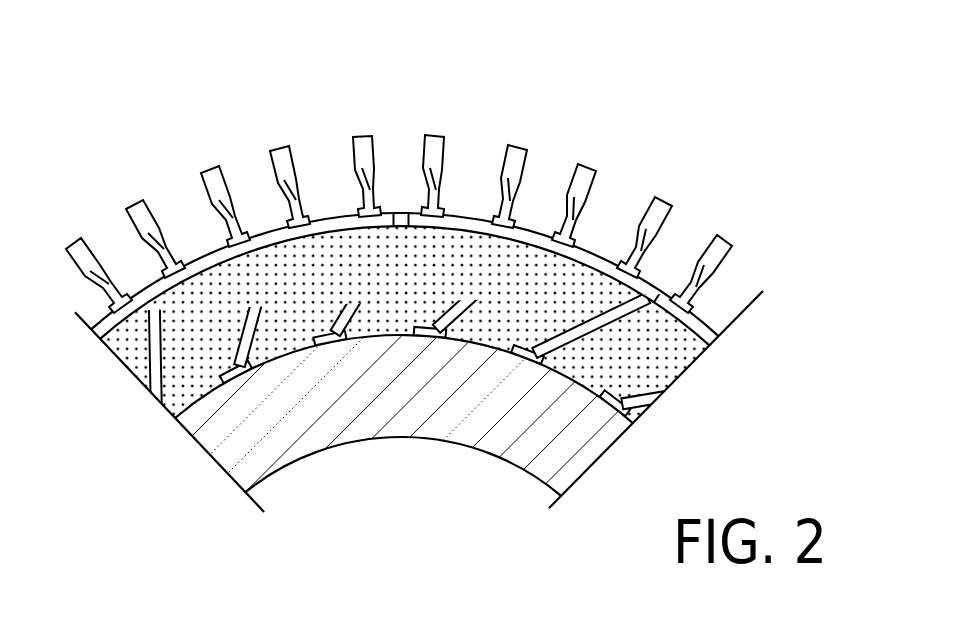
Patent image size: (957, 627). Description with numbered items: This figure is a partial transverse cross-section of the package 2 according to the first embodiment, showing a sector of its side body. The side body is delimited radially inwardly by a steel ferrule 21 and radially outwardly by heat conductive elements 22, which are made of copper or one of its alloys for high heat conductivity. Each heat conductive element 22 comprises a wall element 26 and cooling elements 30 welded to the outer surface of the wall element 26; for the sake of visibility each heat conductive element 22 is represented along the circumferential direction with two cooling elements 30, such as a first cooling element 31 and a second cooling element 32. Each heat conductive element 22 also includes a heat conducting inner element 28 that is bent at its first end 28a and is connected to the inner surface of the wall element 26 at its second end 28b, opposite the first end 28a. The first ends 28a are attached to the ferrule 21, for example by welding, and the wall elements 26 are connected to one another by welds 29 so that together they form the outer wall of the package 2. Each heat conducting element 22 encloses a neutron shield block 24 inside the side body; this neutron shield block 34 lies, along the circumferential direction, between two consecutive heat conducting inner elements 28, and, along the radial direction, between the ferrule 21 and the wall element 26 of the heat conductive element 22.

The package 2 is at (770, 445).
The steel ferrule 21 is at (583, 440).
The heat conductive element 22 is at (747, 265).
The neutron shield block 24 is at (655, 355).
The wall element 26 is at (660, 297).
The heat conducting inner element 28 is at (585, 320).
The first end 28a is at (513, 366).
The second end 28b is at (660, 322).
The weld 29 is at (403, 219).
The cooling element 30 is at (357, 130).
The first cooling element 31 is at (298, 185).
The second cooling element 32 is at (395, 147).
The neutron shield block 34 is at (268, 148).